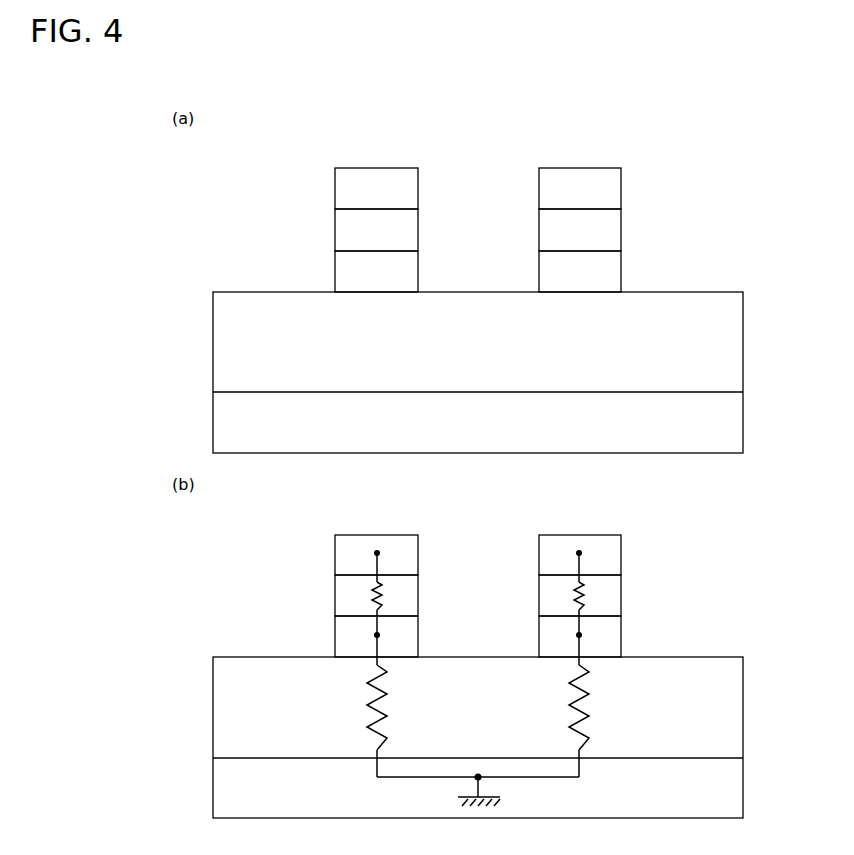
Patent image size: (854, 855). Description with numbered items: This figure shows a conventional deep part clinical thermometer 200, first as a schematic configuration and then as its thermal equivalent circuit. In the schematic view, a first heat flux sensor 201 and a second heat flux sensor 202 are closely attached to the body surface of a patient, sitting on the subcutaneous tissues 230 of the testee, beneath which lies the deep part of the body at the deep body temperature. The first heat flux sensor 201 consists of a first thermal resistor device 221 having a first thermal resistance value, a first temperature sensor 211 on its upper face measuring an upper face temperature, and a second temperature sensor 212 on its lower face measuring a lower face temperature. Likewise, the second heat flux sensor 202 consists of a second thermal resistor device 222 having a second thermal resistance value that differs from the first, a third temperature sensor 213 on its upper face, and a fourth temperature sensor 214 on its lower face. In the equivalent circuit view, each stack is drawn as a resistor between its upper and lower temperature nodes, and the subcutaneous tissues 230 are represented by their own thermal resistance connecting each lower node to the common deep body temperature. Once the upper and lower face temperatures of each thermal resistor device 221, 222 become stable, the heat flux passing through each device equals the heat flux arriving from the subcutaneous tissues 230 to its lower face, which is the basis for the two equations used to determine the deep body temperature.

The deep part clinical thermometer 200 is at (813, 126).
The first heat flux sensor 201 is at (382, 392).
The second heat flux sensor 202 is at (583, 392).
The first temperature sensor 211 is at (383, 169).
The second temperature sensor 212 is at (335, 267).
The third temperature sensor 213 is at (586, 169).
The fourth temperature sensor 214 is at (539, 267).
The first thermal resistor device 221 is at (335, 226).
The second thermal resistor device 222 is at (539, 226).
The subcutaneous tissues 230 is at (743, 332).